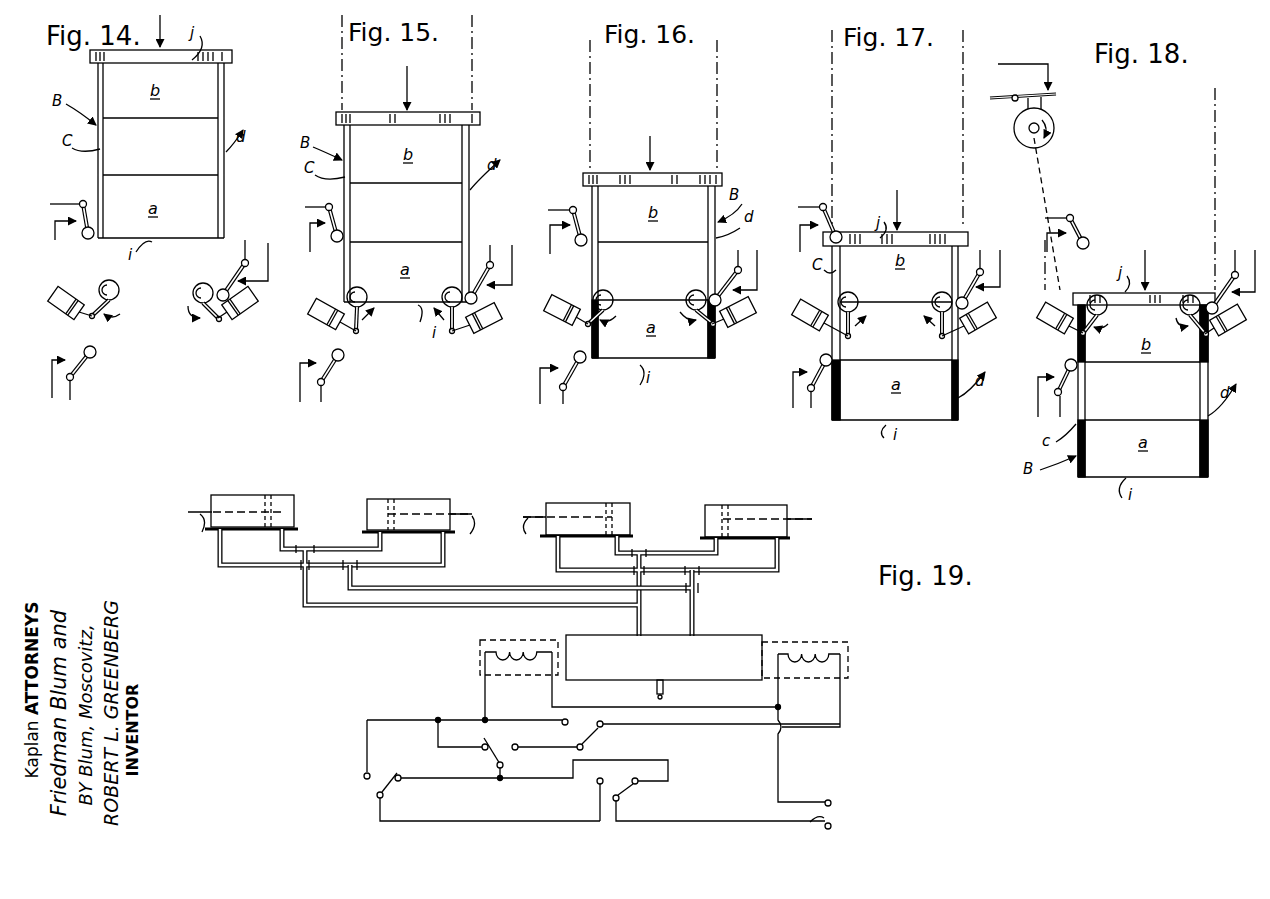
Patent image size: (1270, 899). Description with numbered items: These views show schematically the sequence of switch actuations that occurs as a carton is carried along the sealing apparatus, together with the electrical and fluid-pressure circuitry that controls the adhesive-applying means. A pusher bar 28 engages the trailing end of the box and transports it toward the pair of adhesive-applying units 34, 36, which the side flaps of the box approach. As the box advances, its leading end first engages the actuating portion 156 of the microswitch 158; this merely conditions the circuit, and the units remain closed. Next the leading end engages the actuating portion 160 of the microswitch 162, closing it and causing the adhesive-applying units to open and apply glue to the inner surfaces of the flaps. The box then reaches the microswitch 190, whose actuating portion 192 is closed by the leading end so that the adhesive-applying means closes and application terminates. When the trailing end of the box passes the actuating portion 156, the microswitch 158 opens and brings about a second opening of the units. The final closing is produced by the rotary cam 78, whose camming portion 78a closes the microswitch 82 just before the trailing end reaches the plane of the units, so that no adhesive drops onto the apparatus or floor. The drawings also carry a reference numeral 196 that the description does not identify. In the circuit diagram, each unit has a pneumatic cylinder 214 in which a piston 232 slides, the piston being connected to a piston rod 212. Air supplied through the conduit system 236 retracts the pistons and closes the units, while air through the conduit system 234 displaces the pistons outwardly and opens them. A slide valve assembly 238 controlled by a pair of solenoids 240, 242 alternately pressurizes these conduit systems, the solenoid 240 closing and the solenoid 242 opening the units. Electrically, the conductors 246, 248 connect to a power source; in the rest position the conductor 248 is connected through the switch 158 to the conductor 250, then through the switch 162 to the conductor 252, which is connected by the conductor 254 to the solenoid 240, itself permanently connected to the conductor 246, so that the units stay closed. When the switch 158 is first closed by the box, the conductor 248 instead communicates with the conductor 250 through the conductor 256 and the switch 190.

In FIG. 14, the pusher bar 28 is at (232, 57).
In FIG. 15, the pusher bar 28 is at (480, 119).
In FIG. 16, the pusher bar 28 is at (722, 178).
In FIG. 17, the pusher bar 28 is at (918, 232).
In FIG. 18, the pusher bar 28 is at (1155, 290).
In FIG. 14, the adhesive-applying unit 34 is at (70, 318).
In FIG. 15, the adhesive-applying unit 34 is at (306, 316).
In FIG. 16, the adhesive-applying unit 34 is at (548, 320).
In FIG. 17, the adhesive-applying unit 34 is at (804, 326).
In FIG. 18, the adhesive-applying unit 34 is at (1052, 328).
In FIG. 14, the adhesive-applying unit 36 is at (215, 328).
In FIG. 15, the adhesive-applying unit 36 is at (468, 334).
In FIG. 16, the adhesive-applying unit 36 is at (730, 330).
In FIG. 17, the adhesive-applying unit 36 is at (990, 326).
In FIG. 18, the adhesive-applying unit 36 is at (1236, 328).
In FIG. 18, the rotary cam 78 is at (1055, 135).
In FIG. 18, the camming portion 78a is at (1050, 102).
In FIG. 18, the microswitch 82 is at (1060, 82).
In FIG. 19, the microswitch 82 is at (594, 742).
In FIG. 14, the actuating portion 156 is at (90, 243).
In FIG. 15, the actuating portion 156 is at (334, 243).
In FIG. 16, the actuating portion 156 is at (578, 246).
In FIG. 17, the actuating portion 156 is at (846, 228).
In FIG. 18, the actuating portion 156 is at (1090, 242).
In FIG. 14, the microswitch 158 is at (73, 200).
In FIG. 15, the microswitch 158 is at (320, 204).
In FIG. 16, the microswitch 158 is at (567, 205).
In FIG. 17, the microswitch 158 is at (822, 204).
In FIG. 18, the microswitch 158 is at (1085, 218).
In FIG. 19, the microswitch 158 is at (632, 792).
In FIG. 14, the actuating portion 160 is at (217, 290).
In FIG. 15, the actuating portion 160 is at (471, 290).
In FIG. 16, the actuating portion 160 is at (723, 288).
In FIG. 17, the actuating portion 160 is at (968, 290).
In FIG. 18, the actuating portion 160 is at (1220, 304).
In FIG. 14, the microswitch 162 is at (232, 271).
In FIG. 15, the microswitch 162 is at (482, 298).
In FIG. 16, the microswitch 162 is at (764, 296).
In FIG. 17, the microswitch 162 is at (1022, 268).
In FIG. 18, the microswitch 162 is at (1244, 250).
In FIG. 19, the microswitch 162 is at (508, 748).
In FIG. 14, the microswitch 190 is at (84, 372).
In FIG. 15, the microswitch 190 is at (334, 377).
In FIG. 16, the microswitch 190 is at (580, 374).
In FIG. 17, the microswitch 190 is at (816, 360).
In FIG. 18, the microswitch 190 is at (1030, 384).
In FIG. 19, the microswitch 190 is at (368, 786).
In FIG. 14, the actuating portion 192 is at (97, 352).
In FIG. 15, the actuating portion 192 is at (345, 352).
In FIG. 16, the actuating portion 192 is at (574, 352).
In FIG. 17, the actuating portion 192 is at (821, 371).
In FIG. 18, the actuating portion 192 is at (1068, 360).
In FIG. 14, the pivot 196 is at (194, 296).
In FIG. 15, the pivot 196 is at (442, 300).
In FIG. 16, the pivot 196 is at (690, 290).
In FIG. 17, the pivot 196 is at (934, 294).
In FIG. 18, the pivot 196 is at (1186, 312).
In FIG. 19, the piston rod 212 is at (824, 502).
In FIG. 14, the pneumatic cylinder 214 is at (82, 288).
In FIG. 15, the pneumatic cylinder 214 is at (417, 321).
In FIG. 16, the pneumatic cylinder 214 is at (667, 320).
In FIG. 17, the pneumatic cylinder 214 is at (894, 317).
In FIG. 18, the pneumatic cylinder 214 is at (1056, 304).
In FIG. 19, the pneumatic cylinder 214 is at (244, 494).
In FIG. 19, the piston 232 is at (272, 494).
In FIG. 19, the conduit system 234 is at (282, 540).
In FIG. 19, the conduit system 236 is at (506, 586).
In FIG. 19, the slide valve assembly 238 is at (672, 667).
In FIG. 19, the solenoid 240 is at (512, 622).
In FIG. 19, the solenoid 242 is at (826, 626).
In FIG. 19, the conductor 246 is at (736, 706).
In FIG. 19, the conductor 248 is at (840, 816).
In FIG. 19, the conductor 250 is at (508, 780).
In FIG. 19, the conductor 252 is at (442, 748).
In FIG. 19, the conductor 254 is at (420, 720).
In FIG. 19, the conductor 256 is at (430, 810).